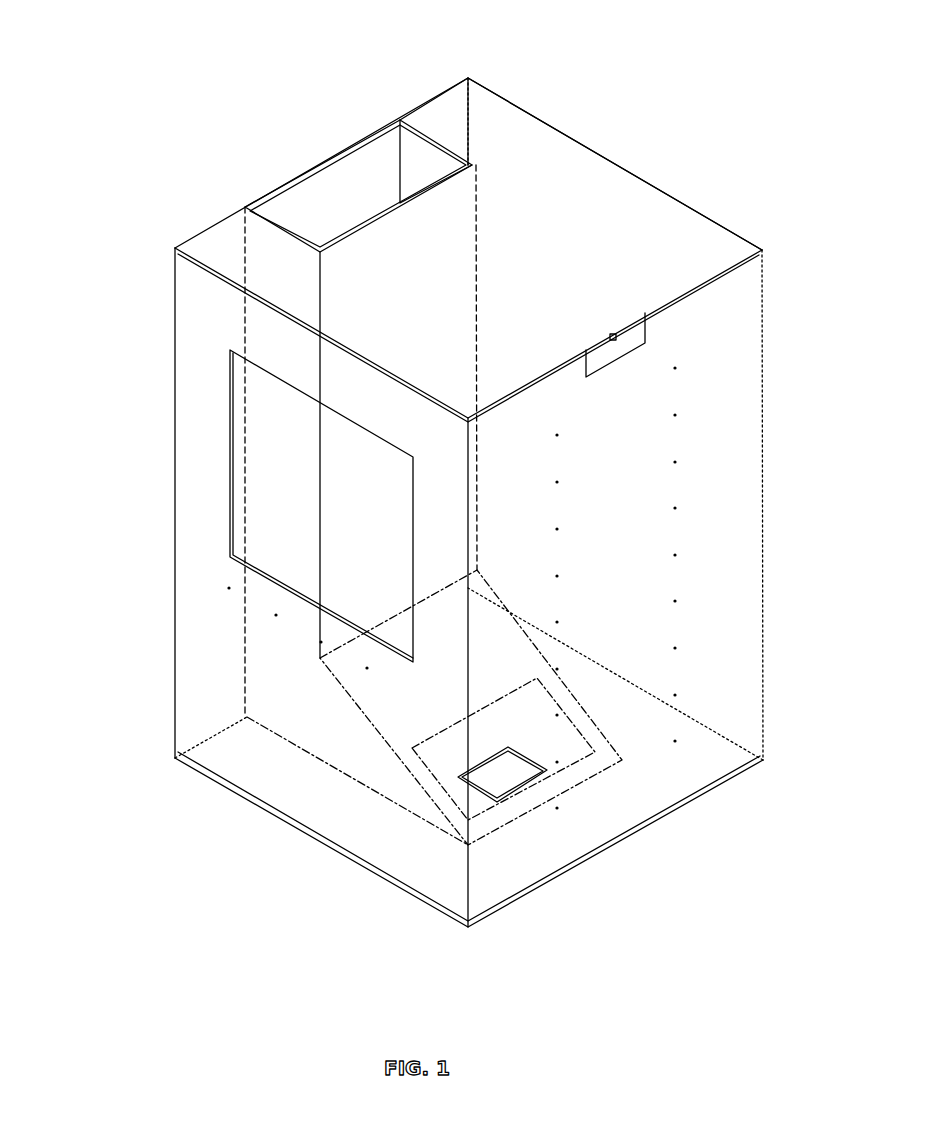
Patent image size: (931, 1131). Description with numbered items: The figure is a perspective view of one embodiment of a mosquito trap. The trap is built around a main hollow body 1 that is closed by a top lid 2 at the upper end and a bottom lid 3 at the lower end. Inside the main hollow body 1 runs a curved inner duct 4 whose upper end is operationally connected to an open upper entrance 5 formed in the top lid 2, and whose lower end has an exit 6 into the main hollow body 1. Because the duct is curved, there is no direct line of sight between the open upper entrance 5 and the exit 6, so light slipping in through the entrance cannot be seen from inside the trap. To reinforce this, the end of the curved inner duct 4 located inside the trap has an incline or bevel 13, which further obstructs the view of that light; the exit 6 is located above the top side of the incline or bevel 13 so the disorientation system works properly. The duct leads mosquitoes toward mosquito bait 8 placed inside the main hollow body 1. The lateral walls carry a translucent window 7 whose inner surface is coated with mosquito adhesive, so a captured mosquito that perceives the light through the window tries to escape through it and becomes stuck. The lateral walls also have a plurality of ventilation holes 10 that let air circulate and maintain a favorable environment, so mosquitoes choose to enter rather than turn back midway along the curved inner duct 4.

The main hollow body 1 is at (200, 420).
The top lid 2 is at (575, 228).
The bottom lid 3 is at (350, 860).
The curved inner duct 4 is at (477, 213).
The open upper entrance 5 is at (357, 205).
The exit 6 is at (493, 702).
The translucent window 7 is at (230, 497).
The mosquito bait 8 is at (518, 750).
The ventilation holes 10 is at (276, 615).
The incline or bevel 13 is at (352, 702).